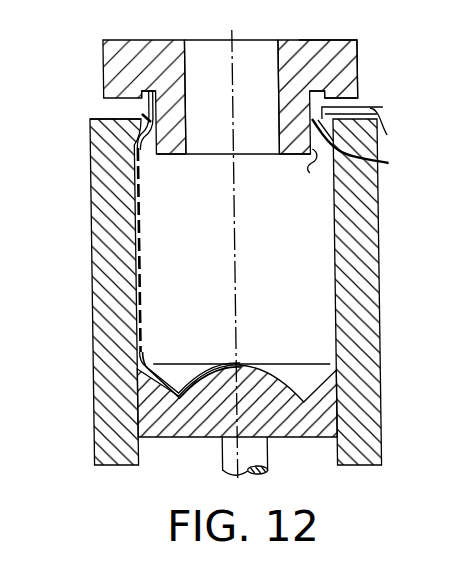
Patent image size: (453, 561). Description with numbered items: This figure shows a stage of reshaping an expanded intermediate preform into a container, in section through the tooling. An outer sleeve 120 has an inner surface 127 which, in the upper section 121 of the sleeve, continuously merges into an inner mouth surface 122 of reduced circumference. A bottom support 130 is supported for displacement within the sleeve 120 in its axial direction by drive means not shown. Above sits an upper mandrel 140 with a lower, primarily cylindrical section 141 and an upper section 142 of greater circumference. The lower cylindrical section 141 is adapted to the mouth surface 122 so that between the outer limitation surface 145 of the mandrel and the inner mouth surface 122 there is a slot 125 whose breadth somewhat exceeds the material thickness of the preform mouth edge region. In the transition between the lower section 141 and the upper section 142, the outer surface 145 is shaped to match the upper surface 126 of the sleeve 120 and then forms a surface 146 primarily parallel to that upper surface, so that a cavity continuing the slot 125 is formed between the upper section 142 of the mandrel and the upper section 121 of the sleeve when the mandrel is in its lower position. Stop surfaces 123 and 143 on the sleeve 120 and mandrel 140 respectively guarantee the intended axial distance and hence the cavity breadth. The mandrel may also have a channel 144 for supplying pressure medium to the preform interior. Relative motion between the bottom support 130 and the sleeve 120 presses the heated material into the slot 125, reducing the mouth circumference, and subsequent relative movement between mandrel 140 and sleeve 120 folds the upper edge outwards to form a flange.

The outer sleeve 120 is at (94, 215).
The upper section of the sleeve 121 is at (97, 129).
The inner mouth surface 122 is at (148, 119).
The stop surface 123 is at (396, 130).
The slot 125 is at (367, 151).
The upper surface of the outer sleeve 126 is at (371, 107).
The inner surface 127 is at (141, 248).
The bottom support 130 is at (208, 438).
The upper mandrel 140 is at (303, 50).
The lower cylindrical section 141 is at (291, 154).
The upper section of the mandrel 142 is at (349, 52).
The stop surface 143 is at (352, 88).
The channel 144 is at (212, 50).
The outer limitation surface 145 is at (309, 173).
The surface parallel to the upper surface of the sleeve 146 is at (158, 90).